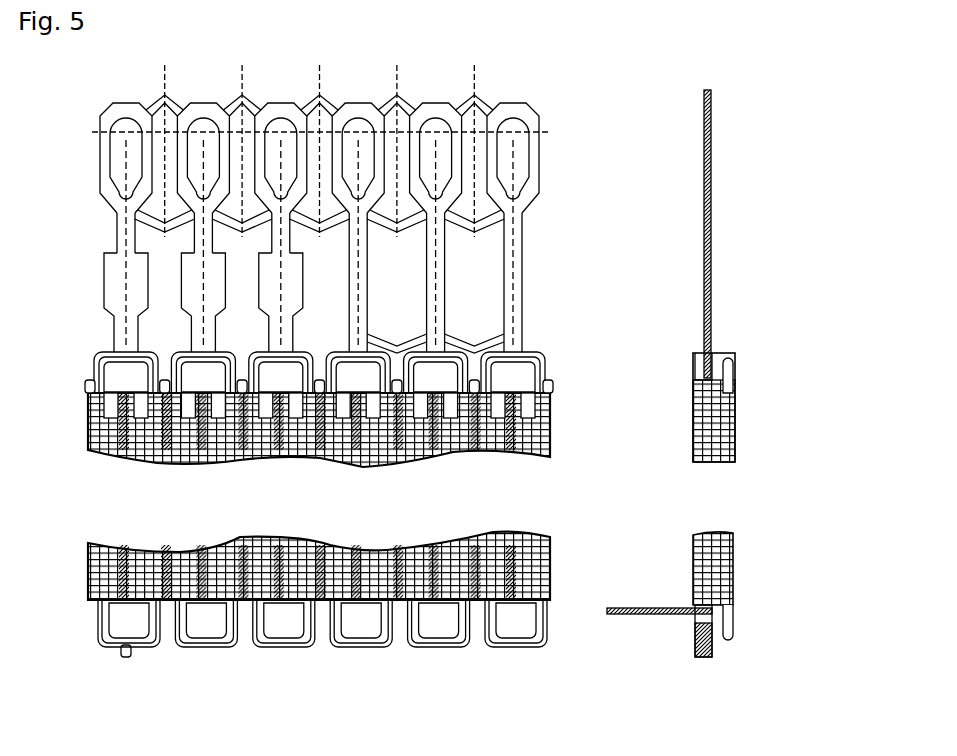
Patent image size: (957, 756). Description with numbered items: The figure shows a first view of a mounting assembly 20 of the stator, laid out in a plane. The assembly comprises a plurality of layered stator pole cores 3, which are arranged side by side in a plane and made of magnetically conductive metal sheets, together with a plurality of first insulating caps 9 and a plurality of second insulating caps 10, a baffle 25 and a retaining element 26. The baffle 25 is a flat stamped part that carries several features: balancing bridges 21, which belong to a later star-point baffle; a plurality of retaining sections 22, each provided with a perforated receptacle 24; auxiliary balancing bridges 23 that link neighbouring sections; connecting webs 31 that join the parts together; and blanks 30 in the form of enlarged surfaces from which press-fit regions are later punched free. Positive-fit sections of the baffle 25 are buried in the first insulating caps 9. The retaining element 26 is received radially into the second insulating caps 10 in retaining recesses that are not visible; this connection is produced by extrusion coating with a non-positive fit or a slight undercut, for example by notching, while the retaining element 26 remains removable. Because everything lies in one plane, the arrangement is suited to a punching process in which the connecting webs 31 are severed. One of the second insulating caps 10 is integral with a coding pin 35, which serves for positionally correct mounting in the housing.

The stator pole core 3 is at (735, 562).
The first insulating cap 9 is at (117, 378).
The second insulating cap 10 is at (735, 616).
The mounting assembly 20 is at (687, 112).
The balancing bridge 21 is at (470, 338).
The retaining section 22 is at (104, 160).
The auxiliary balancing bridge 23 is at (160, 96).
The perforated receptacle 24 is at (510, 145).
The baffle 25 is at (538, 107).
The retaining element 26 is at (640, 615).
The blank 30 is at (106, 272).
The connecting web 31 is at (116, 242).
The coding pin 35 is at (705, 657).